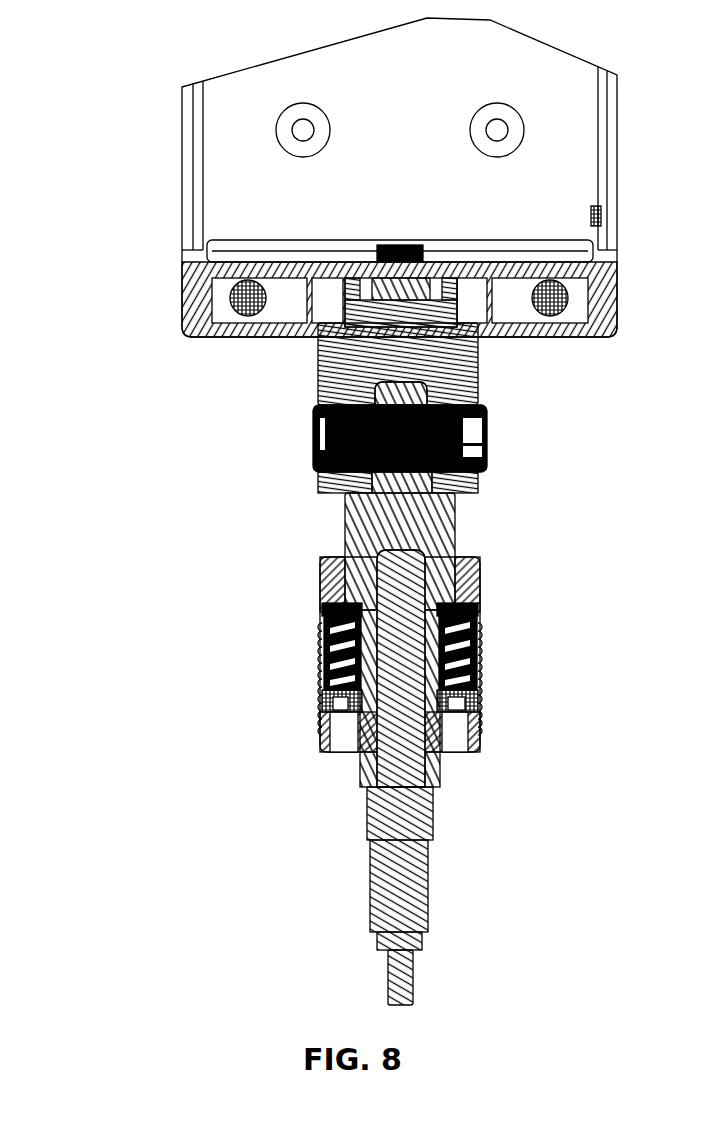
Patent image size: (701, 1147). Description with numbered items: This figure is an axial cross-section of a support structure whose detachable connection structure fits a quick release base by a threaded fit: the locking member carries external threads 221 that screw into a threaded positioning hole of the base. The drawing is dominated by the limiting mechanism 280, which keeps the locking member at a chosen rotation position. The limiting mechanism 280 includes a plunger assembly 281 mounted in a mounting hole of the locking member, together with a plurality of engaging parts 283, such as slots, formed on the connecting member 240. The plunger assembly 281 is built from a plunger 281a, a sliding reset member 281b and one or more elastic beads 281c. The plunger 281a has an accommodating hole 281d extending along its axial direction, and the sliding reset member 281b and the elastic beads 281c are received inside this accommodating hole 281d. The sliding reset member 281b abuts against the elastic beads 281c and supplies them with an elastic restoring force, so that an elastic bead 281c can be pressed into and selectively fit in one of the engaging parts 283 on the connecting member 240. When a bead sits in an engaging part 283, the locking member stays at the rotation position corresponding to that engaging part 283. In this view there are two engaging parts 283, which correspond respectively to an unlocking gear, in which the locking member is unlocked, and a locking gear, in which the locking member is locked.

The external threads 221 is at (433, 803).
The connecting member 240 is at (417, 533).
The limiting mechanism 280 is at (122, 510).
The plunger assembly 281 is at (200, 583).
The plunger 281a is at (322, 688).
The sliding reset member 281b is at (322, 640).
The elastic bead 281c is at (322, 601).
The accommodating hole 281d is at (484, 637).
The engaging parts 283 is at (322, 582).